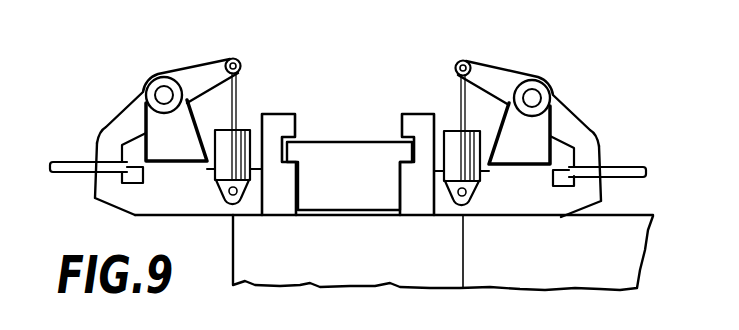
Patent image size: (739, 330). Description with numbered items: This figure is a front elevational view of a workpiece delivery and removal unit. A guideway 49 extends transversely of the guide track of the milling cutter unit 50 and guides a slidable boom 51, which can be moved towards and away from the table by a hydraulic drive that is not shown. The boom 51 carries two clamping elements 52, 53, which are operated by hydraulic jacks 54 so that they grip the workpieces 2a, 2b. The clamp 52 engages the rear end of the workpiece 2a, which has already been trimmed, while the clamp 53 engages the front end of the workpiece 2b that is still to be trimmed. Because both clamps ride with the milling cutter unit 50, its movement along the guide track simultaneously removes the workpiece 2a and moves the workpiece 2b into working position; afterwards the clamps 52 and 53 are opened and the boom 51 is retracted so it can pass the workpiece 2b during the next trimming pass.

The guideway 49 is at (289, 137).
The milling cutter unit 50 is at (583, 252).
The boom 51 is at (361, 153).
The clamping element 52 is at (562, 115).
The clamping element 53 is at (137, 110).
The hydraulic jacks 54 is at (230, 157).
The workpiece 2a is at (618, 167).
The workpiece 2b is at (80, 162).